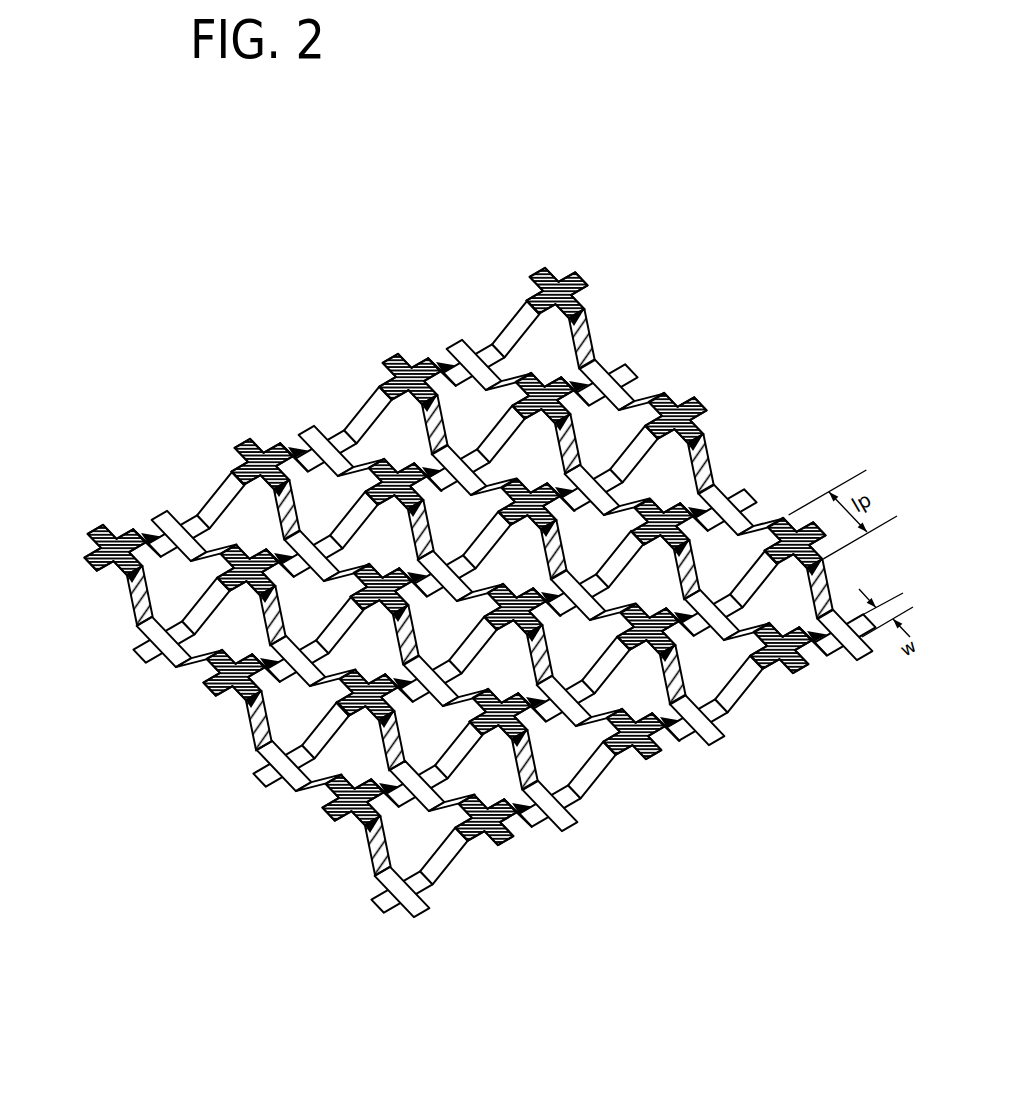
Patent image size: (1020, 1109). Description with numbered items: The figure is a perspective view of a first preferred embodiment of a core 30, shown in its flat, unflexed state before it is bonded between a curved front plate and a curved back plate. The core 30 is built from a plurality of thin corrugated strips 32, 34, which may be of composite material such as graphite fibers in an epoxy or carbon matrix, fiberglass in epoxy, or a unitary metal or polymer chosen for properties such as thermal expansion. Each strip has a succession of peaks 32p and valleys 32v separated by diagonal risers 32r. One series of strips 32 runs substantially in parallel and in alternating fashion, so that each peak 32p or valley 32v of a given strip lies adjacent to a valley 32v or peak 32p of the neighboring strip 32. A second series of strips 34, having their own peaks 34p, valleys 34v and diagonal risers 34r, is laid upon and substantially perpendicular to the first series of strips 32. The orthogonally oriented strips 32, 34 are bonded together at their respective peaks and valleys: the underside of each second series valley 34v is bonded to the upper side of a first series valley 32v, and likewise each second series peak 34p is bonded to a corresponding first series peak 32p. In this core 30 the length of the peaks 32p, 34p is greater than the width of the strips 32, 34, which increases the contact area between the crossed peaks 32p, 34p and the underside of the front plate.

The core 30 is at (474, 544).
The first series corrugated strips 32 is at (474, 609).
The second series corrugated strips 34 is at (467, 563).
The peak 32p is at (466, 832).
The diagonal riser 32r is at (520, 813).
The valley 32v is at (548, 808).
The peak 34p is at (575, 298).
The diagonal riser 34r is at (590, 337).
The valley 34v is at (616, 382).